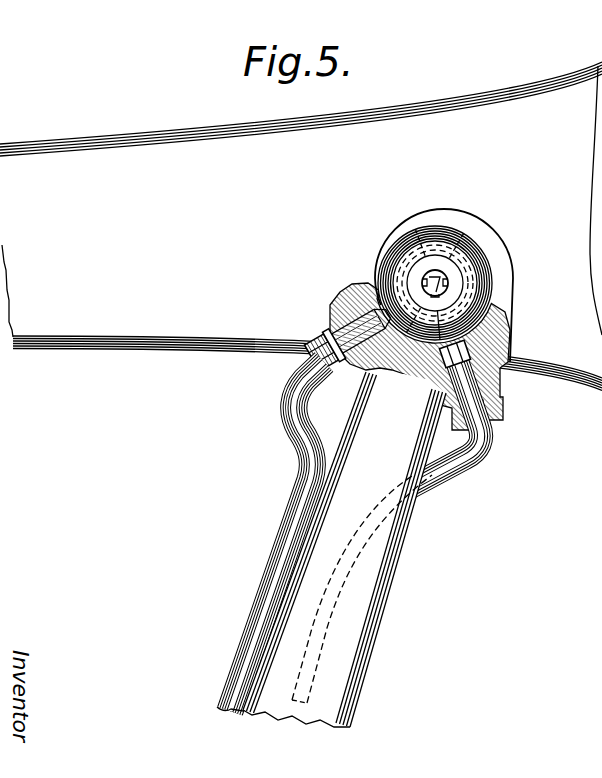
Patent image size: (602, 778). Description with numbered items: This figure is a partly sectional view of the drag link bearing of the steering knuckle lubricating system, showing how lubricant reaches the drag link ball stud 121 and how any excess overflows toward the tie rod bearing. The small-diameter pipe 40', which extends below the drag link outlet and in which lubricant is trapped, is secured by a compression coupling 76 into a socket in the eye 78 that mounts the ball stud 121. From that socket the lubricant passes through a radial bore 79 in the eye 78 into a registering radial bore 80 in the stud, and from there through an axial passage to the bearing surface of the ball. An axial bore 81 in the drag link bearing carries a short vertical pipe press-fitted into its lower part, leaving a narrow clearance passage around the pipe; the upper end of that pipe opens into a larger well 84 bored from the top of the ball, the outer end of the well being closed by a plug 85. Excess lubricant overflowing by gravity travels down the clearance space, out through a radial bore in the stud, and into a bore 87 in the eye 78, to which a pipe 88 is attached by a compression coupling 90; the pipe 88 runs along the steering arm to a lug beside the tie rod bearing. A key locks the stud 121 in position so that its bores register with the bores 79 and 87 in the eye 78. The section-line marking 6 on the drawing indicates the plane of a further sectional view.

The compression coupling 76 is at (316, 345).
The eye 78 is at (366, 284).
The radial bore 79 is at (344, 305).
The radial bore 80 is at (380, 272).
The axial bore 81 is at (390, 250).
The drag link ball stud 121 is at (390, 262).
The well 84 is at (438, 280).
The plug 85 is at (448, 283).
The bore 87 is at (468, 344).
The pipe 88 is at (450, 466).
The compression coupling 90 is at (507, 360).
The pipe 40' is at (277, 536).
The section line 6- 6 is at (287, 366).